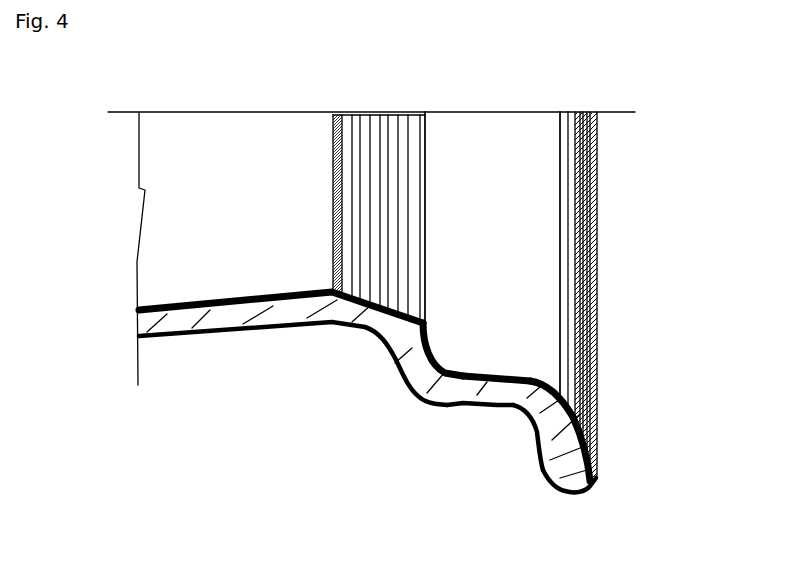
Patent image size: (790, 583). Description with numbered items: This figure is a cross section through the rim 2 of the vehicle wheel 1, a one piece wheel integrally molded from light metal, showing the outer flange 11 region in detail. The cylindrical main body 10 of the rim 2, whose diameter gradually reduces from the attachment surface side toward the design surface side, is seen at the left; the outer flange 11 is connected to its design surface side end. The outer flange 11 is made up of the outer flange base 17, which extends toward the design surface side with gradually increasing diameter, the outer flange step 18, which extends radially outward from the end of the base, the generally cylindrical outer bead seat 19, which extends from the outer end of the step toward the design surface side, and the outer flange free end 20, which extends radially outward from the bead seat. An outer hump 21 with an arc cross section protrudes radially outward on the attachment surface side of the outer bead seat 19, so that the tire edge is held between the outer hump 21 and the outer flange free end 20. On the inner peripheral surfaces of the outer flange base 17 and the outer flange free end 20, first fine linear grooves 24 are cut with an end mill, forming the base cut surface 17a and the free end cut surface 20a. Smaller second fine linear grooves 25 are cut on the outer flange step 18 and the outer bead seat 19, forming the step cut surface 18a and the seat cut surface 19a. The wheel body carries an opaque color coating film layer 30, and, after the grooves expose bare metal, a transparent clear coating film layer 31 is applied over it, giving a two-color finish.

The vehicle wheel 1 is at (647, 140).
The rim 2 is at (425, 428).
The main body 10 is at (242, 325).
The outer flange 11 is at (410, 420).
The outer flange base 17 is at (337, 333).
The base cut surface 17a is at (407, 163).
The outer flange step 18 is at (412, 353).
The step cut surface 18a is at (428, 337).
The outer bead seat 19 is at (493, 410).
The seat cut surface 19a is at (500, 375).
The outer flange free end 20 is at (557, 489).
The free end cut surface 20a is at (598, 438).
The outer hump 21 is at (430, 407).
The first fine linear grooves 24 is at (397, 112).
The second fine linear grooves 25 is at (480, 375).
The color coating film layer 30 is at (206, 305).
The clear coating film layer 31 is at (163, 306).